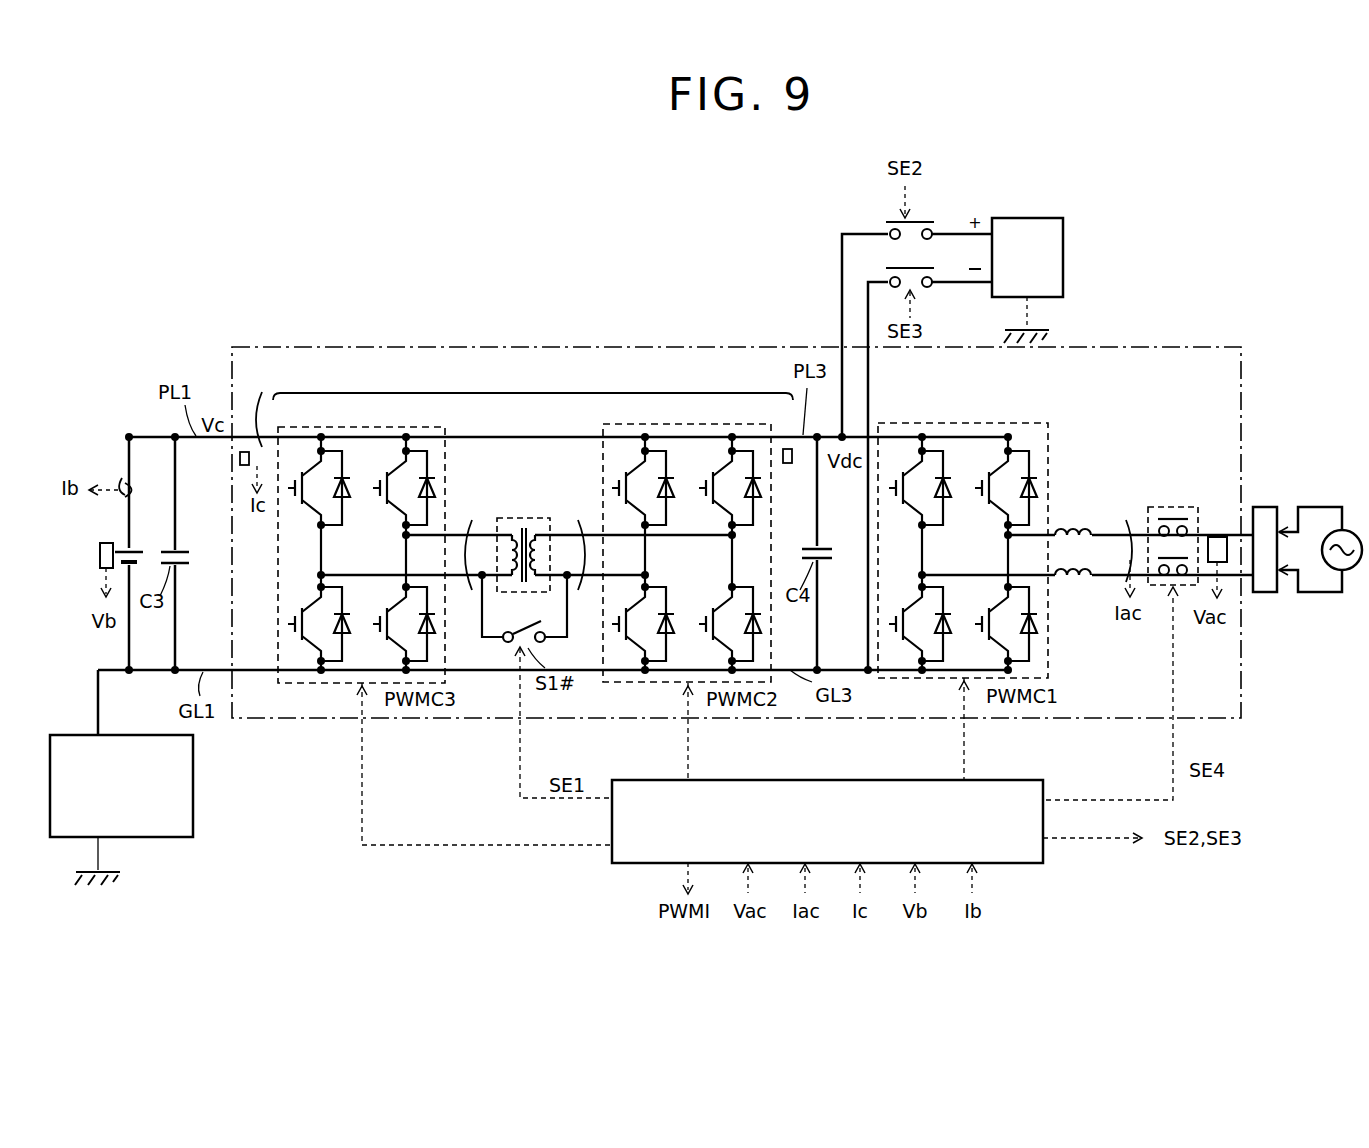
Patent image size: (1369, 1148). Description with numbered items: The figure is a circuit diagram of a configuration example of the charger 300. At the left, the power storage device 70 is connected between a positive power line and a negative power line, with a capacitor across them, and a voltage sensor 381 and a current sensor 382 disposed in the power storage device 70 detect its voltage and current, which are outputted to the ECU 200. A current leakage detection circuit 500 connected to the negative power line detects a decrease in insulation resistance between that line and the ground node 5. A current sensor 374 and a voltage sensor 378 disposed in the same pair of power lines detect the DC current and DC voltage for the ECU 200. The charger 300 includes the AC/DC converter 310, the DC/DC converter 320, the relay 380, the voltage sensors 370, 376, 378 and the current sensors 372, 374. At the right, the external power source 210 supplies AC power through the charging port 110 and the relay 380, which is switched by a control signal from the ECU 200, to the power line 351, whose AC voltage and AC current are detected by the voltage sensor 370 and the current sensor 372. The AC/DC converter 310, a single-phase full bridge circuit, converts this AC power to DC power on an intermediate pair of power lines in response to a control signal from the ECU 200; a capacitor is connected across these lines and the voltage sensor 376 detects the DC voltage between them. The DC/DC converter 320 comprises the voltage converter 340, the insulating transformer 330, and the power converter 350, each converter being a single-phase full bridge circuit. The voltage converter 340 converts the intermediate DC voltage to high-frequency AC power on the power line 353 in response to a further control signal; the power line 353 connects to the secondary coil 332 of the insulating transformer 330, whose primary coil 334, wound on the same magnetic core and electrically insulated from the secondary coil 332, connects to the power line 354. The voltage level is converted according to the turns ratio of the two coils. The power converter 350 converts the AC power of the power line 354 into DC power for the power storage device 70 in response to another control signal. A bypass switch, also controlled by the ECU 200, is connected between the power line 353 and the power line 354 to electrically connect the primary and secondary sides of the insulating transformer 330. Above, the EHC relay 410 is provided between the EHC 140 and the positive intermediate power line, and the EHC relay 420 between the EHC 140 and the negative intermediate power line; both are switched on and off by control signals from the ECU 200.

The ground node 5 is at (1037, 330).
The power storage device 70 is at (131, 550).
The charging port 110 is at (1264, 507).
The EHC 140 is at (1063, 258).
The ECU 200 is at (850, 780).
The external power source 210 is at (1352, 530).
The charger 300 is at (1140, 347).
The AC/DC converter 310 is at (960, 423).
The DC/DC converter 320 is at (533, 380).
The insulating transformer 330 is at (524, 518).
The secondary coil 332 is at (536, 526).
The primary coil 334 is at (512, 526).
The voltage converter 340 is at (690, 425).
The power converter 350 is at (362, 427).
The power line 351 is at (1102, 580).
The power line 353 is at (580, 516).
The power line 354 is at (470, 516).
The voltage sensor 370 is at (1217, 537).
The current sensor 372 is at (1128, 518).
The current sensor 374 is at (260, 403).
The voltage sensor 376 is at (788, 464).
The voltage sensor 378 is at (240, 458).
The relay 380 is at (1174, 507).
The voltage sensor 381 is at (100, 550).
The current sensor 382 is at (124, 482).
The EHC relay 410 is at (898, 222).
The EHC relay 420 is at (912, 268).
The current leakage detection circuit 500 is at (72, 735).